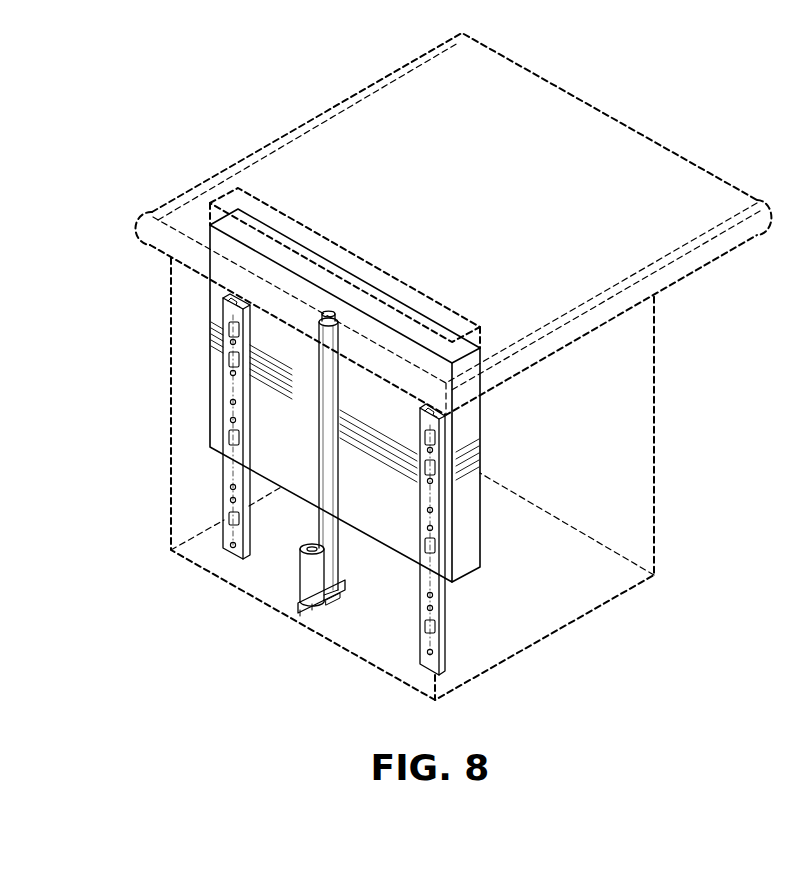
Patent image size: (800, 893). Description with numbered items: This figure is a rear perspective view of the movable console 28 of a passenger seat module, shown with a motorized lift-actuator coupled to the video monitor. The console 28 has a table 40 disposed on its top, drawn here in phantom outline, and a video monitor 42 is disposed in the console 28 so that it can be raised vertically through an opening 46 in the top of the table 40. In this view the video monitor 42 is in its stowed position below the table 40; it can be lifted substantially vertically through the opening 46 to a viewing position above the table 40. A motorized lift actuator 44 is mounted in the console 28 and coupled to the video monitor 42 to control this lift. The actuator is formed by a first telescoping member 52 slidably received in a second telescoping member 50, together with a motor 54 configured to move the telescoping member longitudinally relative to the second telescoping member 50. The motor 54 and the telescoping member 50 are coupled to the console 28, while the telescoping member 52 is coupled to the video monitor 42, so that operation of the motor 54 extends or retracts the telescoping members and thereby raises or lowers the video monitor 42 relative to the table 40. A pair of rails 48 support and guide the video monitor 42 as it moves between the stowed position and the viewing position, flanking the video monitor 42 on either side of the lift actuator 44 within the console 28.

The console 28 is at (626, 462).
The table 40 is at (338, 118).
The video monitor 42 is at (473, 540).
The motorized lift actuator 44 is at (305, 414).
The opening 46 is at (232, 200).
The guide rails 48 is at (230, 485).
The second telescoping member 50 is at (322, 432).
The first telescoping member 52 is at (331, 312).
The motor 54 is at (308, 581).